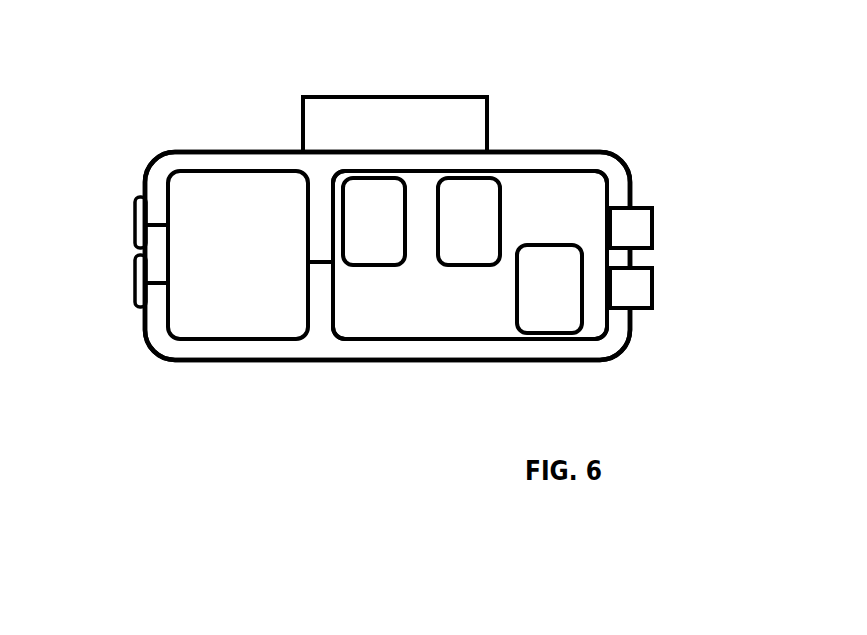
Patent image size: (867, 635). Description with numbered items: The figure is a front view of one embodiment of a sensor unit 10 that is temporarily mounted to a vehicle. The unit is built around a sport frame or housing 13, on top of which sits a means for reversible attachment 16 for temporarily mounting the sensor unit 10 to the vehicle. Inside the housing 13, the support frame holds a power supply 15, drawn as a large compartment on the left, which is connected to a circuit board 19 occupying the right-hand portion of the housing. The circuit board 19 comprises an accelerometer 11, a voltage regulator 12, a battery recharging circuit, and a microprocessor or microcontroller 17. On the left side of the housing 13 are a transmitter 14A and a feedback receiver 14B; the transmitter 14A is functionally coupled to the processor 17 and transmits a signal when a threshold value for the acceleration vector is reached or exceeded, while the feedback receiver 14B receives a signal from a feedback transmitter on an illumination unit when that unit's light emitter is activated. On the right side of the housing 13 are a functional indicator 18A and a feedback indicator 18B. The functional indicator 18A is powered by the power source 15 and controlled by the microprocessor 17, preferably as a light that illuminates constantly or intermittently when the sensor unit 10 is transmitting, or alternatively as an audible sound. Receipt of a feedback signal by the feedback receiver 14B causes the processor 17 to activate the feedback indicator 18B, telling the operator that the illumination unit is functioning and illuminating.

The sensor unit 10 is at (263, 108).
The accelerometer 11 is at (611, 172).
The voltage regulator 12 is at (377, 266).
The support frame 13 is at (157, 357).
The transmitter 14A is at (135, 223).
The feedback receiver 14B is at (135, 283).
The power supply 15 is at (235, 340).
The means for reversible attachment 16 is at (370, 97).
The microprocessor 17 is at (479, 175).
The functional indicator 18A is at (653, 222).
The feedback indicator 18B is at (653, 289).
The circuit board 19 is at (440, 341).